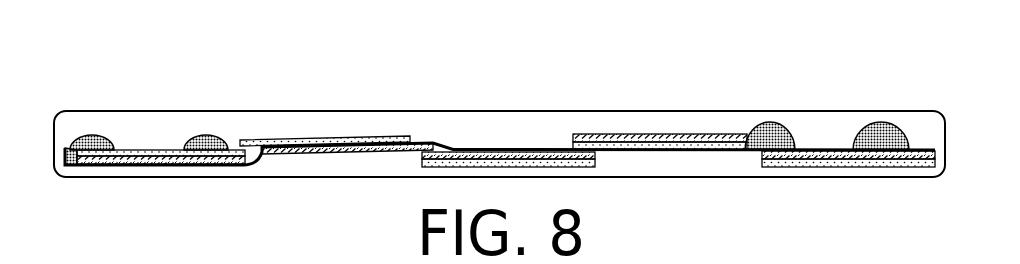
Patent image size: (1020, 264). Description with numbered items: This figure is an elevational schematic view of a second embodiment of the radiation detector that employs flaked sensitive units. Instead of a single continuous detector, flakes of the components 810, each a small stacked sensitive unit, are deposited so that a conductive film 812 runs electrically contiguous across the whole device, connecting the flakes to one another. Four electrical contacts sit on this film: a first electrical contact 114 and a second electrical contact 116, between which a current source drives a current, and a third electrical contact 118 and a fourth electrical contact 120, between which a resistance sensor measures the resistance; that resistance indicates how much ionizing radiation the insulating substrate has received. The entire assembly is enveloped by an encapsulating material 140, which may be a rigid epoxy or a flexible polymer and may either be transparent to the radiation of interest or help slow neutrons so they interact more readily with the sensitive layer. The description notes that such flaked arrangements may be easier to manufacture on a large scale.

The first electrical contact 114 is at (92, 135).
The second electrical contact 116 is at (882, 122).
The third electrical contact 118 is at (206, 135).
The fourth electrical contact 120 is at (770, 122).
The encapsulating material 140 is at (528, 138).
The flakes of the components 810 is at (632, 126).
The conductive film 812 is at (462, 148).